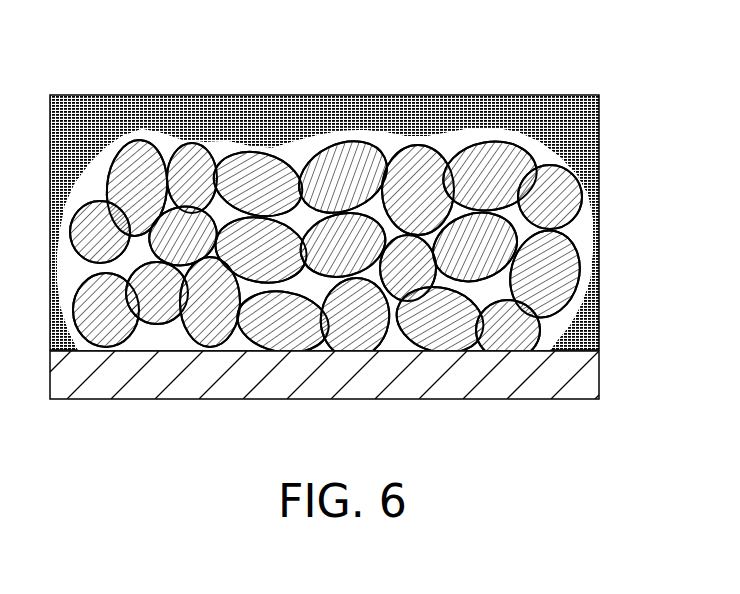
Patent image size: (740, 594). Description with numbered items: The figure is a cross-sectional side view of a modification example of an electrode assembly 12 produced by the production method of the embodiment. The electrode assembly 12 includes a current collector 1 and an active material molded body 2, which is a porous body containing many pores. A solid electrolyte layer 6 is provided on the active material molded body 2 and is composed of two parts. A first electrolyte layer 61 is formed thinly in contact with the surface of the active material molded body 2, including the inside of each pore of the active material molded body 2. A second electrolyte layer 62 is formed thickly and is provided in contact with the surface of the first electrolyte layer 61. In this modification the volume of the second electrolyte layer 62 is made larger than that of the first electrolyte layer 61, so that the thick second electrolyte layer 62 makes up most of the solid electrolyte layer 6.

The electrode assembly 12 is at (370, 185).
The current collector 1 is at (590, 384).
The active material molded body 2 is at (599, 291).
The solid electrolyte layer 6 is at (373, 235).
The first electrolyte layer 61 is at (599, 173).
The second electrolyte layer 62 is at (599, 125).